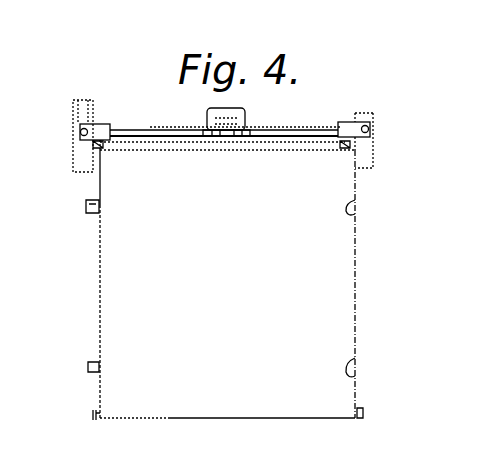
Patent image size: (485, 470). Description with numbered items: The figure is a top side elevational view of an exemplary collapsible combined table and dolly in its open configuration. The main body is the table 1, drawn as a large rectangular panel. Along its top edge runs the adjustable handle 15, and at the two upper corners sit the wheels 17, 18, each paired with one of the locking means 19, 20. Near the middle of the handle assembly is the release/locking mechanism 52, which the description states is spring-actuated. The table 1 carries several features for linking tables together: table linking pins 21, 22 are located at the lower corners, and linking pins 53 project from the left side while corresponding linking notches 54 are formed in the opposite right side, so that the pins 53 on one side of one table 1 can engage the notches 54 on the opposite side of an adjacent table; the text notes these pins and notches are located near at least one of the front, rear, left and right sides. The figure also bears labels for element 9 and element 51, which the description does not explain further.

The table 1 is at (345, 286).
The rail line 9 is at (154, 128).
The adjustable handle 15 is at (305, 148).
The wheel 17 is at (366, 110).
The wheel 18 is at (86, 104).
The locking means 19 is at (351, 122).
The locking means 20 is at (101, 122).
The table linking pin 21 is at (365, 414).
The table linking pin 22 is at (93, 418).
The housing 51 is at (210, 128).
The release/locking mechanism 52 is at (245, 129).
The linking pin 53 is at (90, 213).
The linking notch 54 is at (358, 206).